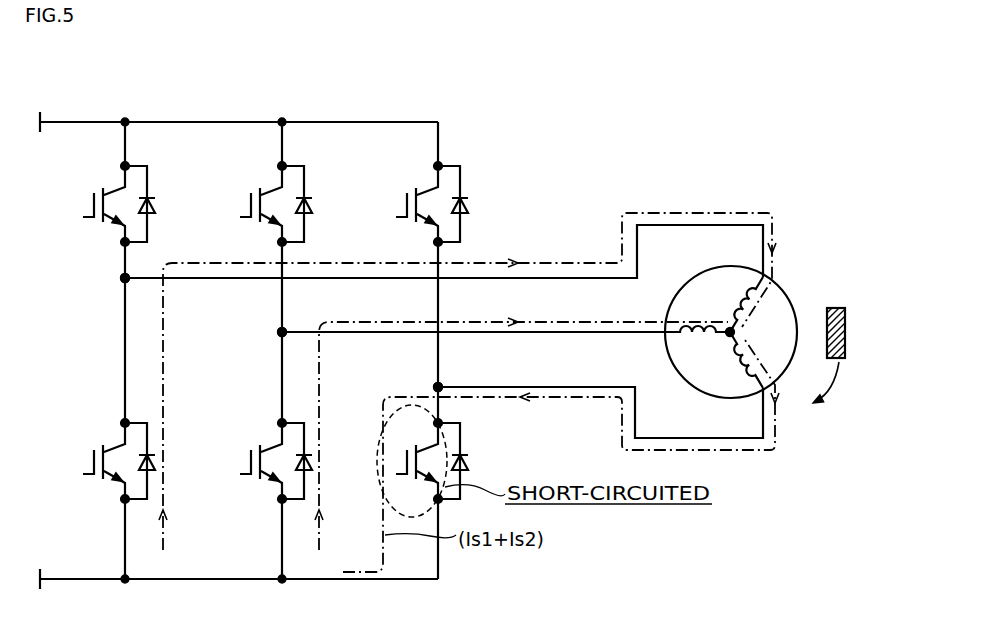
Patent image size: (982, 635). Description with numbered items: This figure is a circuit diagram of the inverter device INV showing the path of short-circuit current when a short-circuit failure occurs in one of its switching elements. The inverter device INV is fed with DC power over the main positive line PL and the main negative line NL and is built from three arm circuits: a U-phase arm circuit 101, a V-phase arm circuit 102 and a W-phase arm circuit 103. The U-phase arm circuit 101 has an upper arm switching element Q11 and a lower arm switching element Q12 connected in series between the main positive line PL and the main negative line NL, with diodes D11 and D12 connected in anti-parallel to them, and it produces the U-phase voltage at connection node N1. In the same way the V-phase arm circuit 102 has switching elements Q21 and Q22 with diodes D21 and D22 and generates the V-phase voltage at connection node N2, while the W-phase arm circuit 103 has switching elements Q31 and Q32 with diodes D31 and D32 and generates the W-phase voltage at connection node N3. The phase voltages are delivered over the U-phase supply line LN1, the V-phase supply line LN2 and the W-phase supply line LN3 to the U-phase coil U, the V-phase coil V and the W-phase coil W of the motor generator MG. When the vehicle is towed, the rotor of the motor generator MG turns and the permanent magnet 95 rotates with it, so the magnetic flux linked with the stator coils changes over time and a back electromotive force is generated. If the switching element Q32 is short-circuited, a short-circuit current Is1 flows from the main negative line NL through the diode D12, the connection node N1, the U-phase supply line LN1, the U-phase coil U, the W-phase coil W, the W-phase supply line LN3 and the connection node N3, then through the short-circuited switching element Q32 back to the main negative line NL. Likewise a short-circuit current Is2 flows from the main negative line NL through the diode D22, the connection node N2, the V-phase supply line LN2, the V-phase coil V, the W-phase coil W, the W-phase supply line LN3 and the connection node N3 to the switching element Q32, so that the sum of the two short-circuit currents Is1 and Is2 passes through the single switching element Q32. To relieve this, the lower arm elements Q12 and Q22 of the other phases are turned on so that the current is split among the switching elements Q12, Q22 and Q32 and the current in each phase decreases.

The main positive line PL is at (81, 119).
The main negative line NL is at (86, 583).
The inverter device INV is at (310, 61).
The switching element Q11 is at (101, 203).
The switching element Q21 is at (258, 203).
The switching element Q31 is at (414, 203).
The switching element Q12 is at (101, 461).
The switching element Q22 is at (259, 461).
The switching element Q32 is at (415, 461).
The diode D11 is at (163, 204).
The diode D21 is at (320, 204).
The diode D31 is at (477, 204).
The diode D12 is at (155, 458).
The diode D22 is at (312, 459).
The diode D32 is at (477, 461).
The U-phase arm circuit 101 is at (114, 289).
The V-phase arm circuit 102 is at (273, 343).
The W-phase arm circuit 103 is at (430, 388).
The connection node N1 is at (127, 276).
The connection node N2 is at (284, 330).
The connection node N3 is at (440, 385).
The U-phase supply line LN1 is at (677, 226).
The V-phase supply line LN2 is at (643, 336).
The W-phase supply line LN3 is at (672, 437).
The motor generator MG is at (787, 293).
The U-phase coil U is at (743, 303).
The V-phase coil V is at (697, 344).
The W-phase coil W is at (742, 361).
The permanent magnet 95 is at (840, 360).
The short-circuit current Is1 is at (467, 381).
The short-circuit current Is2 is at (521, 434).